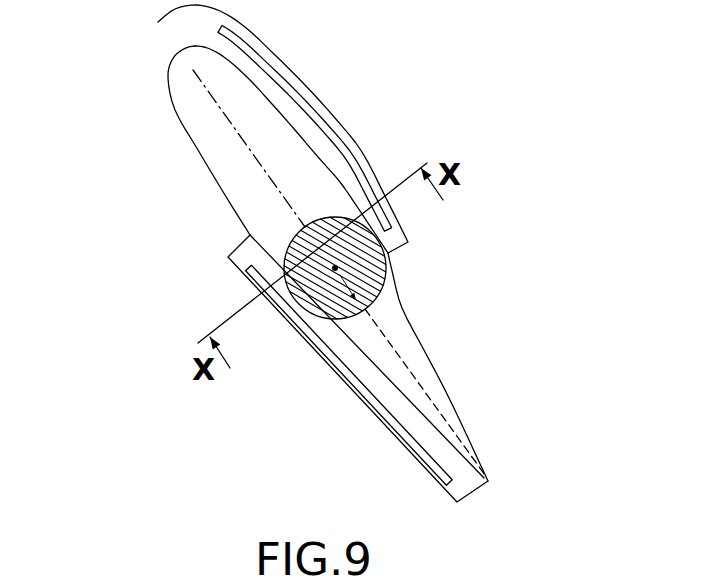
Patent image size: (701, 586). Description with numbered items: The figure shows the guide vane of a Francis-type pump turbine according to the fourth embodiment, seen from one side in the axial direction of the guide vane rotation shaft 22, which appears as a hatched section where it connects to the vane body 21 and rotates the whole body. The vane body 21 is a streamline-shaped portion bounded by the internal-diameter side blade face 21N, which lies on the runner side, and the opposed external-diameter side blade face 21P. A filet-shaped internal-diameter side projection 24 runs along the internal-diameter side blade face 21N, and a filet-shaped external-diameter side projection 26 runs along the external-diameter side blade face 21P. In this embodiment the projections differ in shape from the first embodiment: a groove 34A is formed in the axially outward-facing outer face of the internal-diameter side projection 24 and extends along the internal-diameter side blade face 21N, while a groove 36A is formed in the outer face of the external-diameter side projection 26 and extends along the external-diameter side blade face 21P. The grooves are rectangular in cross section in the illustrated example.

The vane body 21 is at (315, 248).
The internal-diameter side blade face 21N is at (225, 195).
The external-diameter side blade face 21P is at (250, 80).
The guide vane rotation shaft 22 is at (374, 301).
The internal-diameter side projection 24 is at (358, 368).
The external-diameter side projection 26 is at (297, 129).
The groove 34A is at (312, 333).
The groove 36A is at (345, 165).